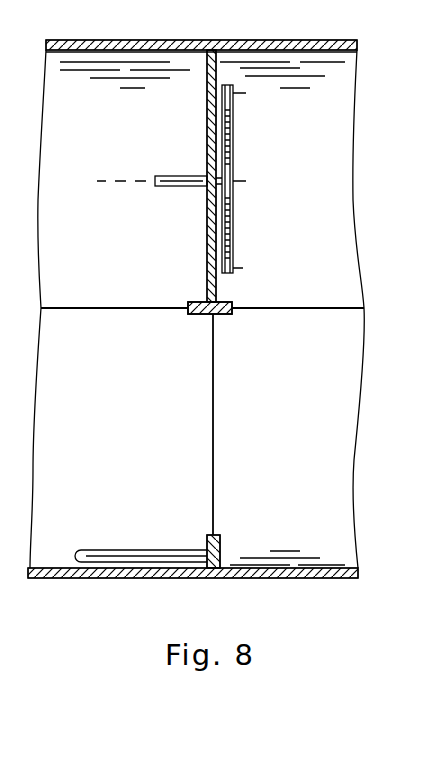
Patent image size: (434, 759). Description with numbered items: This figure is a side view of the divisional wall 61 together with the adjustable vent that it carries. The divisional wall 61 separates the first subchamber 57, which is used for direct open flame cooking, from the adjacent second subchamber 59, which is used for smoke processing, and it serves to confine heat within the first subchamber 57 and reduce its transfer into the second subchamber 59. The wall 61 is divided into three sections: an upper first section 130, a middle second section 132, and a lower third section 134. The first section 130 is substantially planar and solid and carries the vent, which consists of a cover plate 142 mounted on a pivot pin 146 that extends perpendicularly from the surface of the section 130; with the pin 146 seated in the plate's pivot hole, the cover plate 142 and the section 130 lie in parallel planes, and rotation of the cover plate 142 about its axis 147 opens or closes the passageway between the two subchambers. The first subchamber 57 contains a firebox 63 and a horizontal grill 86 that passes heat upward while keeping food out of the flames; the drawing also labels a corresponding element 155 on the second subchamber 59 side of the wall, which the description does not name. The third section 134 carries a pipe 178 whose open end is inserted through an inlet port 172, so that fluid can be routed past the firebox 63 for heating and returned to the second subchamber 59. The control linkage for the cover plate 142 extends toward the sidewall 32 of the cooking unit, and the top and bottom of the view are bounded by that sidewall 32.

The sidewall 32 is at (141, 42).
The first subchamber 57 is at (107, 227).
The second subchamber 59 is at (351, 206).
The firebox 63 is at (104, 469).
The first inlet port 172 is at (336, 493).
The grill 86 is at (122, 312).
The shelf right portion 155 is at (314, 312).
The first section 130 is at (206, 272).
The divisional wall 61 is at (211, 385).
The second section 132 is at (216, 442).
The third section 134 is at (222, 548).
The pipe 178 is at (139, 549).
The pivot pin 146 is at (236, 181).
The cover plate 142 is at (235, 258).
The axis 147 is at (118, 184).